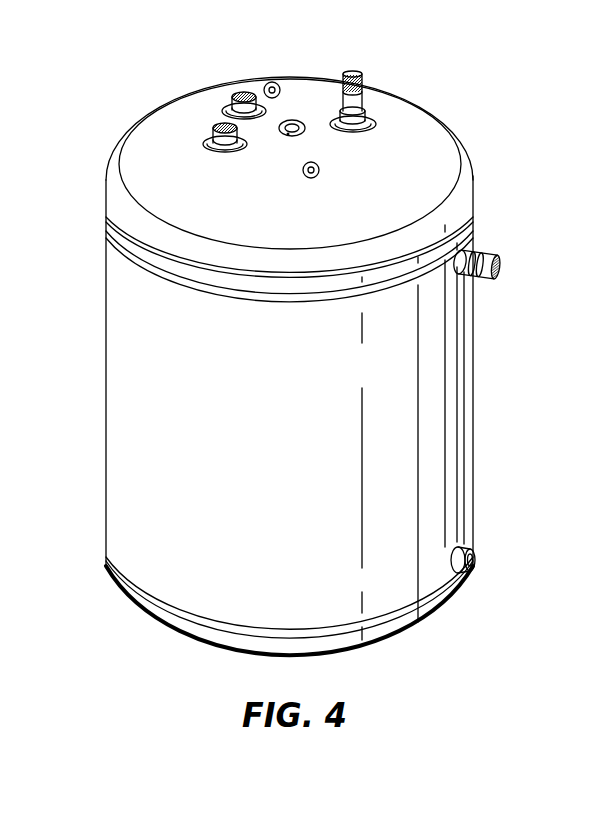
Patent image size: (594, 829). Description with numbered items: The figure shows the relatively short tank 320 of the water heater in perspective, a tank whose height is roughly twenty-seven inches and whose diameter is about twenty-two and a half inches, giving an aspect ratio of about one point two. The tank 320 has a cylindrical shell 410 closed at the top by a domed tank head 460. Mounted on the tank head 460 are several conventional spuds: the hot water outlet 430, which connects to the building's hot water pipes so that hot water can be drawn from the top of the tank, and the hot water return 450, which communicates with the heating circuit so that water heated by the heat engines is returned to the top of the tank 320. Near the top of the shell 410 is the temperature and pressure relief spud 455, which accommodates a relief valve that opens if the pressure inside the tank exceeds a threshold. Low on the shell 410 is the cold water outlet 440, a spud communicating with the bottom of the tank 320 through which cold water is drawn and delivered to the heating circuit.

The tank 320 is at (310, 345).
The shell 410 is at (120, 325).
The hot water outlet 430 is at (213, 128).
The cold water outlet 440 is at (474, 563).
The hot water return 450 is at (357, 98).
The temperature and pressure relief spud 455 is at (487, 248).
The tank head 460 is at (324, 142).